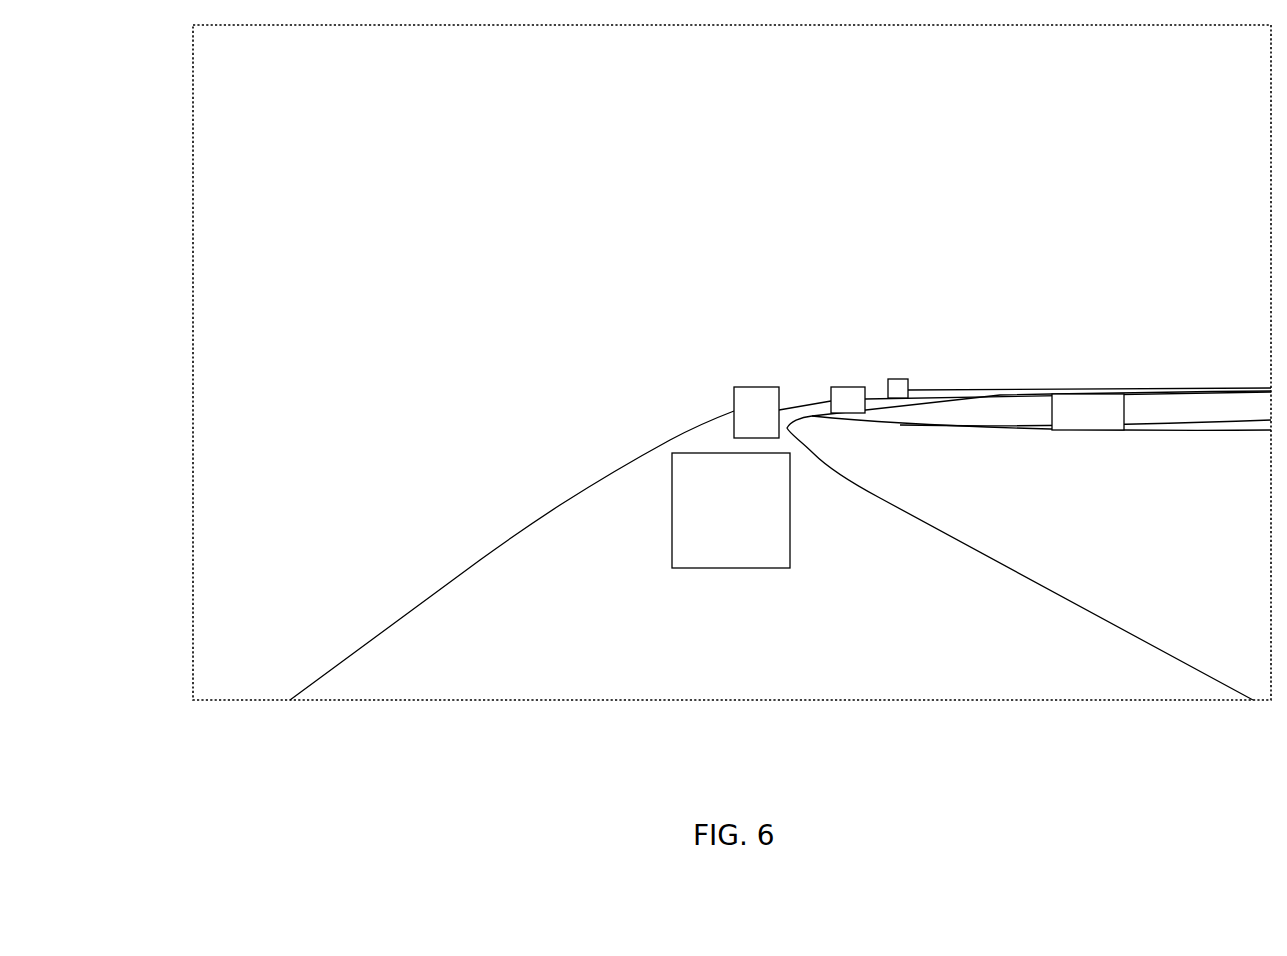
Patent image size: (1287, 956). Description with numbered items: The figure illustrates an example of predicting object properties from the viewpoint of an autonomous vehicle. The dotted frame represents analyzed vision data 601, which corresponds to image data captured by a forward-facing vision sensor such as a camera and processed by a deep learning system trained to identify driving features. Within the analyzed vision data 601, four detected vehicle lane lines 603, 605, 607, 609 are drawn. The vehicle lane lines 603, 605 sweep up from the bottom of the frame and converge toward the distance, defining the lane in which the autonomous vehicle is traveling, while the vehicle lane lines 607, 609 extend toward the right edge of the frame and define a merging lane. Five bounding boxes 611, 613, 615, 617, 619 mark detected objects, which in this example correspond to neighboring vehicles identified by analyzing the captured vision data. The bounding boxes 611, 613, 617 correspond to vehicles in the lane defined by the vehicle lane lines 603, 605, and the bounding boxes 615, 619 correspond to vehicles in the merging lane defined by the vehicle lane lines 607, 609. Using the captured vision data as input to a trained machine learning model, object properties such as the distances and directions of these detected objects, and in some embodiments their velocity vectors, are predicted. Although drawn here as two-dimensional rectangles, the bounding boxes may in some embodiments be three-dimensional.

The analyzed vision data 601 is at (193, 100).
The vehicle lane line 603 is at (357, 652).
The vehicle lane line 605 is at (1170, 652).
The vehicle lane line 607 is at (1237, 431).
The vehicle lane line 609 is at (1237, 421).
The bounding box 611 is at (672, 538).
The bounding box 613 is at (734, 402).
The bounding box 615 is at (851, 387).
The bounding box 617 is at (908, 385).
The bounding box 619 is at (1087, 431).